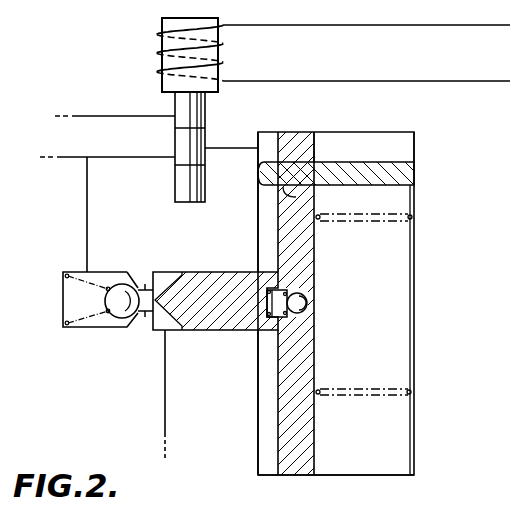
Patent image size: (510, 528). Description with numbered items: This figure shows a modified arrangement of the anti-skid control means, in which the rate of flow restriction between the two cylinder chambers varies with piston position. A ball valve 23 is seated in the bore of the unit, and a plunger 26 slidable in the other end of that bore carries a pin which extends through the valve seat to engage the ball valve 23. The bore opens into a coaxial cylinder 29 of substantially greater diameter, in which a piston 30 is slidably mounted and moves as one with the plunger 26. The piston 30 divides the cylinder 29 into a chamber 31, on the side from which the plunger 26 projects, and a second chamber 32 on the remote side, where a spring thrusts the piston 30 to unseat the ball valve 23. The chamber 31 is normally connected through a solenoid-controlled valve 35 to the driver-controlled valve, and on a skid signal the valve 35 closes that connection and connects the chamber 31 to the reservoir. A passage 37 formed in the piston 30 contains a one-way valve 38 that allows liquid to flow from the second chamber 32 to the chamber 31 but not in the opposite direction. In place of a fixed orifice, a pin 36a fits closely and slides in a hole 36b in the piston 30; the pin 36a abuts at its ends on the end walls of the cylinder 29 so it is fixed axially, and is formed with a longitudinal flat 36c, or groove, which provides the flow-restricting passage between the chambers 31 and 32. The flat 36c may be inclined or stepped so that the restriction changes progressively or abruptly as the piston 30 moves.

The ball valve 23 is at (119, 317).
The plunger 26 is at (228, 331).
The cylinder 29 is at (361, 476).
The piston 30 is at (300, 453).
The chamber 31 is at (268, 424).
The second chamber 32 is at (390, 438).
The valve 35 is at (180, 107).
The pin 36a is at (378, 176).
The hole 36b is at (280, 205).
The longitudinal flat 36c is at (340, 161).
The passage 37 is at (282, 281).
The one-way valve 38 is at (305, 308).